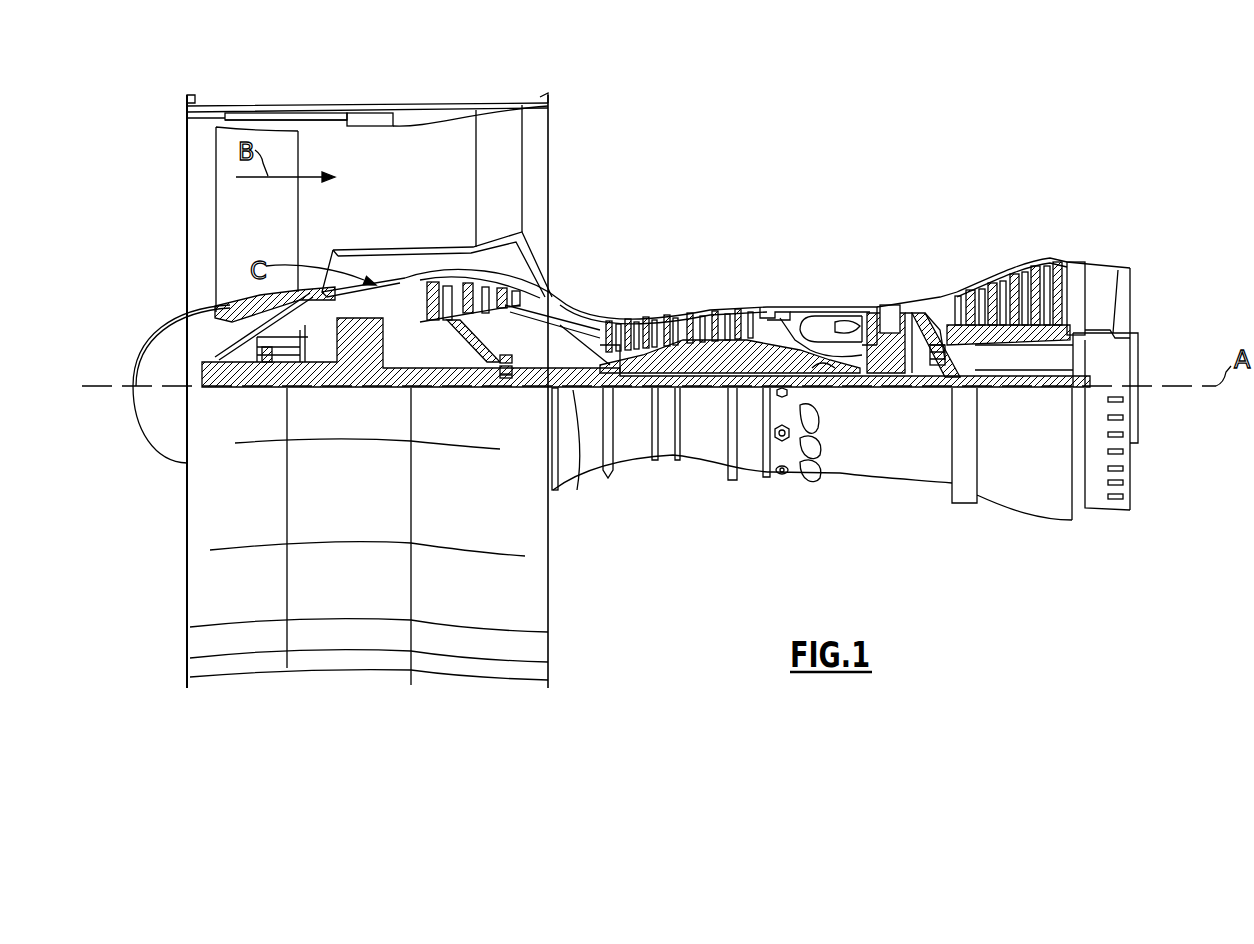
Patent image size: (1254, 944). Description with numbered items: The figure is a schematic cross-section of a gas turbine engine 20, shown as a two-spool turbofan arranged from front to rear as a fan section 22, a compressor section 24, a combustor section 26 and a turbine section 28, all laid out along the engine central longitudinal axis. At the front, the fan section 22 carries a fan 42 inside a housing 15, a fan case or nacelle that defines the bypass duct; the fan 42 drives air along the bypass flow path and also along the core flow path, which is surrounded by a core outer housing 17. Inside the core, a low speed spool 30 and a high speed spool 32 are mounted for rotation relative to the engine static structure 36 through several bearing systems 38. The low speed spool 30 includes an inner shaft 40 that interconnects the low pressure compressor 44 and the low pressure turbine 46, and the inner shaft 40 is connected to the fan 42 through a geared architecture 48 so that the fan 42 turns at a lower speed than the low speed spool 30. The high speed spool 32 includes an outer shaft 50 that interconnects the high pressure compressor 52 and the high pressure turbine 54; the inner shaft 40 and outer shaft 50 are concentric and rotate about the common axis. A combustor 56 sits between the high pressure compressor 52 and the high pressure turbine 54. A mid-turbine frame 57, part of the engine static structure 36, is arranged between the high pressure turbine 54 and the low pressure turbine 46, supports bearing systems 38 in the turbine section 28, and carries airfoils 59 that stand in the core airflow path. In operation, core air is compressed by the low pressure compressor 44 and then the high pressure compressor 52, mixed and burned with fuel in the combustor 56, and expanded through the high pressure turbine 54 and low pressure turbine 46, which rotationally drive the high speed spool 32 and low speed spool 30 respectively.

The gas turbine engine 20 is at (836, 149).
The fan section 22 is at (298, 92).
The housing 15 is at (369, 108).
The fan 42 is at (272, 229).
The geared architecture 48 is at (378, 370).
The core outer housing 17 is at (572, 300).
The low pressure compressor 44 is at (480, 296).
The compressor section 24 is at (621, 270).
The high pressure compressor 52 is at (686, 318).
The high speed spool 32 is at (756, 355).
The combustor section 26 is at (823, 272).
The combustor 56 is at (825, 328).
The high pressure turbine 54 is at (888, 298).
The mid-turbine frame 57 is at (931, 293).
The turbine section 28 is at (973, 236).
The low pressure turbine 46 is at (1015, 268).
The airfoils 59 is at (958, 352).
The bearing systems 38 is at (507, 375).
The outer shaft 50 is at (822, 365).
The low speed spool 30 is at (707, 400).
The engine static structure 36 is at (749, 487).
The inner shaft 40 is at (577, 490).